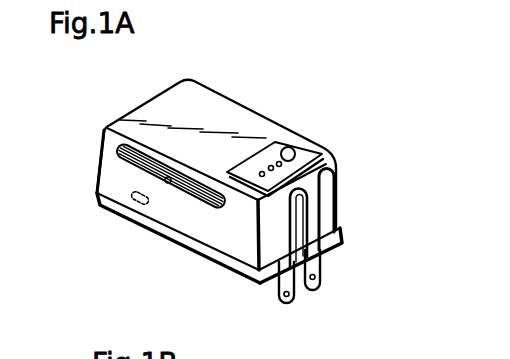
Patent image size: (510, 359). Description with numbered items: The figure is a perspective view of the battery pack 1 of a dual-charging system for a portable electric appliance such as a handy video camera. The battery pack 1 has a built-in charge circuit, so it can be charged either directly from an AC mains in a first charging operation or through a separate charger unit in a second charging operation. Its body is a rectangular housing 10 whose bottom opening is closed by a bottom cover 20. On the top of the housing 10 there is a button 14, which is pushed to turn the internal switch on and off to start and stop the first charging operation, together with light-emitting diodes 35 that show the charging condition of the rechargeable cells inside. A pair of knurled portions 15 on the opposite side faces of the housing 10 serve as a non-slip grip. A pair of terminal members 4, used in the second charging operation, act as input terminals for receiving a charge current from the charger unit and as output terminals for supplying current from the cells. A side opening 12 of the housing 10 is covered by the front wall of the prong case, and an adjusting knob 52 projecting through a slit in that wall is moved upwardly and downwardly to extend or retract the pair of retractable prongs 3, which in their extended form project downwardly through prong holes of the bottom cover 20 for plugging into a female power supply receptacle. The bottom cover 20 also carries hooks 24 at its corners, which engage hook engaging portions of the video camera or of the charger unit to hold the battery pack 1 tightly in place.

The battery pack 1 is at (192, 102).
The housing 10 is at (235, 108).
The bottom cover 20 is at (202, 252).
The hooks 24 is at (97, 201).
The knurled portions 15 is at (120, 163).
The terminal members 4 is at (165, 183).
The button 14 is at (298, 149).
The light-emitting diodes 35 is at (263, 172).
The side opening 12 is at (321, 219).
The adjusting knob 52 is at (308, 201).
The retractable prongs 3 is at (311, 291).